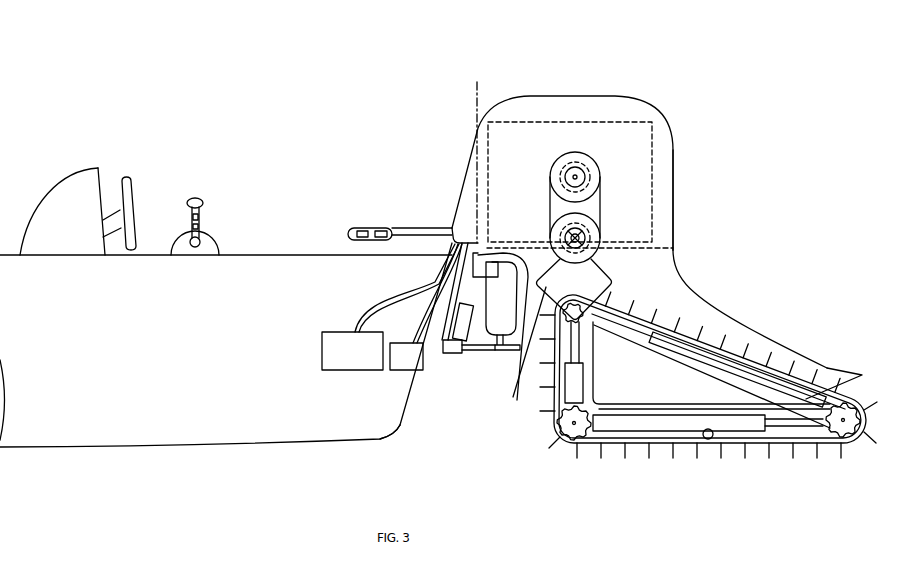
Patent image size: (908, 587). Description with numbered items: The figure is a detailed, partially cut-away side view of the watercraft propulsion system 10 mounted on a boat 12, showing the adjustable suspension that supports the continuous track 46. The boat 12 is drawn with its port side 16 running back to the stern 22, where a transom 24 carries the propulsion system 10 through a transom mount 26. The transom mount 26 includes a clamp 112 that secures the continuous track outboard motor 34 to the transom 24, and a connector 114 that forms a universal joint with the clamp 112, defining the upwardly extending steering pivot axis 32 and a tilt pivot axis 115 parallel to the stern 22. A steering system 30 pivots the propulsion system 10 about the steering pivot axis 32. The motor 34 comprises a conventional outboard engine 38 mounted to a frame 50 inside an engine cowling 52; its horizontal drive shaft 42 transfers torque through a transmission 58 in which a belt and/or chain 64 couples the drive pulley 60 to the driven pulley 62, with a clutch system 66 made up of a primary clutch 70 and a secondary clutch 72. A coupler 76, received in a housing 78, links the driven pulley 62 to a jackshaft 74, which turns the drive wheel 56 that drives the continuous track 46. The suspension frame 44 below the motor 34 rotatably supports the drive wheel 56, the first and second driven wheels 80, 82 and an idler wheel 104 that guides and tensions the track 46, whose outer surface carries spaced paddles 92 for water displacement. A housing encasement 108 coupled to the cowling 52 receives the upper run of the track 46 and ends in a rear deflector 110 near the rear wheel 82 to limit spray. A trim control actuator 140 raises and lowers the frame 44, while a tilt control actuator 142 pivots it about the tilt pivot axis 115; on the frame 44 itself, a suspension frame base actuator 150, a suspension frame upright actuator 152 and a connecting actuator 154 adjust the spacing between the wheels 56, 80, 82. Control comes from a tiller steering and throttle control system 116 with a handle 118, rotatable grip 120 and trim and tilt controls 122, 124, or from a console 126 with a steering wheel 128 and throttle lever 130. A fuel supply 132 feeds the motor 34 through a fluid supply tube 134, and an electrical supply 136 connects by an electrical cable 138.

The watercraft propulsion system 10 is at (668, 60).
The boat 12 is at (102, 102).
The port side 16 is at (127, 442).
The stern 22 is at (417, 400).
The transom 24 is at (404, 427).
The transom mount 26 is at (487, 377).
The steering system 30 is at (453, 172).
The steering pivot axis 32 is at (475, 88).
The continuous track outboard motor 34 is at (590, 92).
The outboard engine 38 is at (658, 126).
The drive shaft 42 is at (567, 173).
The suspension frame 44 is at (792, 432).
The continuous track 46 is at (802, 444).
The frame 50 is at (667, 247).
The engine cowling 52 is at (675, 158).
The drive wheel 56 is at (590, 322).
The transmission 58 is at (615, 282).
The drive pulley 60 is at (593, 160).
The driven pulley 62 is at (583, 217).
The belt and/or chain 64 is at (548, 197).
The clutch system 66 is at (582, 152).
The primary clutch 70 is at (600, 170).
The secondary clutch 72 is at (600, 232).
The jackshaft 74 is at (567, 243).
The coupler 76 is at (543, 347).
The housing 78 is at (517, 372).
The first driven wheel 80 is at (573, 432).
The second driven wheel 82 is at (848, 428).
The paddles 92 is at (623, 462).
The idler wheel 104 is at (709, 440).
The housing encasement 108 is at (730, 316).
The rear deflector 110 is at (840, 366).
The clamp 112 is at (470, 280).
The connector 114 is at (493, 328).
The tilt pivot axis 115 is at (478, 243).
The tiller steering and throttle control system 116 is at (410, 187).
The handle 118 is at (410, 230).
The grip 120 is at (352, 233).
The trim control 122 is at (200, 217).
The tilt control 124 is at (200, 232).
The console 126 is at (163, 137).
The steering wheel 128 is at (125, 177).
The throttle lever 130 is at (200, 200).
The fuel supply 132 is at (337, 370).
The fluid supply tube 134 is at (373, 305).
The electrical supply 136 is at (403, 370).
The electrical cable 138 is at (430, 327).
The trim control actuator 140 is at (457, 320).
The tilt control actuator 142 is at (453, 353).
The suspension frame base actuator 150 is at (677, 424).
The suspension frame upright actuator 152 is at (580, 392).
The connecting actuator 154 is at (747, 370).